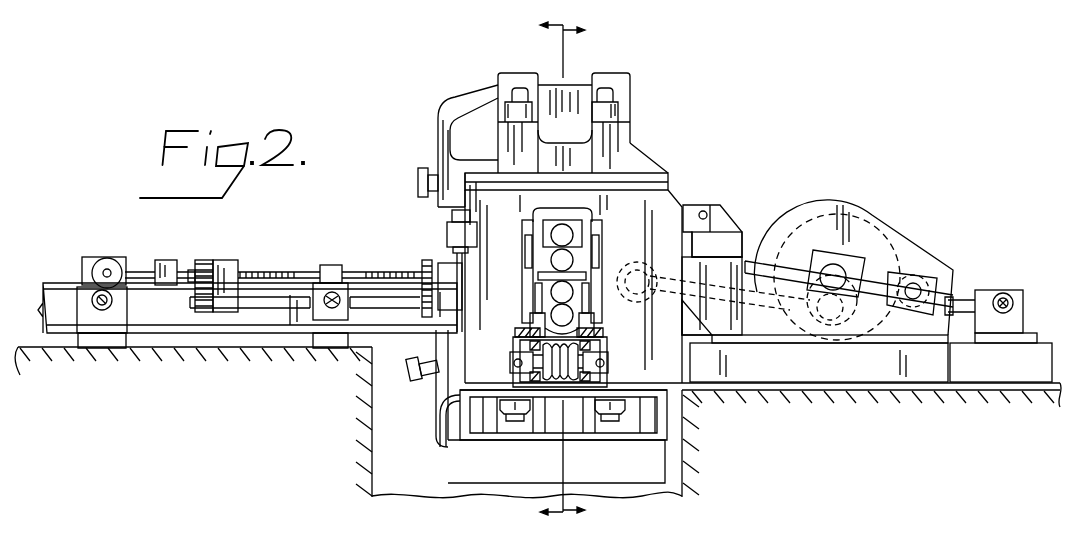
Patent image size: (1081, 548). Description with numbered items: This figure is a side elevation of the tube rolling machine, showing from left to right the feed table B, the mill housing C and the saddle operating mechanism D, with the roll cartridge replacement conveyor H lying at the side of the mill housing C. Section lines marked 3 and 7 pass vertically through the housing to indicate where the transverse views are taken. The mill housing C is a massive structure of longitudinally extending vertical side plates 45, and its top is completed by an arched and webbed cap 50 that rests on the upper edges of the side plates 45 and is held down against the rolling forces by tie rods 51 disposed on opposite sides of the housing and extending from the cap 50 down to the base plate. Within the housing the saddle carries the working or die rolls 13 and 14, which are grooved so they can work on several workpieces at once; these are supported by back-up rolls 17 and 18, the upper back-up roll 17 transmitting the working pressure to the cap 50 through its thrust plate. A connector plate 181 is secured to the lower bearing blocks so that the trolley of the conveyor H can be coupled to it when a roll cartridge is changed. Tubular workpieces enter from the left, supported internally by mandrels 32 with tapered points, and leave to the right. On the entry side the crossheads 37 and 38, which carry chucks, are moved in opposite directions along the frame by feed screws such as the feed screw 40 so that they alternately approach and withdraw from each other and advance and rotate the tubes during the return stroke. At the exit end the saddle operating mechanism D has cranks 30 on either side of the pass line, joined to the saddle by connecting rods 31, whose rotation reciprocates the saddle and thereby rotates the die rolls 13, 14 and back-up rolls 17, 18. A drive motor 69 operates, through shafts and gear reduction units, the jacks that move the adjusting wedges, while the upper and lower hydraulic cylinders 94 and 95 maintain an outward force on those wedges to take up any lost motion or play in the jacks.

The feed table B is at (288, 240).
The mill housing C is at (677, 132).
The saddle operating mechanism D is at (875, 195).
The roll cartridge replacement conveyor H is at (607, 364).
The section line 3- 3 is at (534, 270).
The section line 7- 7 is at (588, 270).
The working or die roll 13 is at (573, 261).
The working or die roll 14 is at (573, 294).
The back-up roll 17 is at (572, 236).
The back-up roll 18 is at (580, 320).
The connector plate 181 is at (560, 314).
The crank 30 is at (840, 337).
The connecting rod 31 is at (760, 337).
The mandrel 32 is at (277, 310).
The crosshead 37 is at (171, 259).
The crosshead 38 is at (232, 259).
The feed screw 40 is at (350, 270).
The side plate 45 is at (663, 212).
The cap 50 is at (568, 83).
The tie rod 51 is at (513, 97).
The drive motor 69 is at (447, 231).
The upper hydraulic cylinder 94 is at (420, 178).
The lower hydraulic cylinder 95 is at (418, 380).